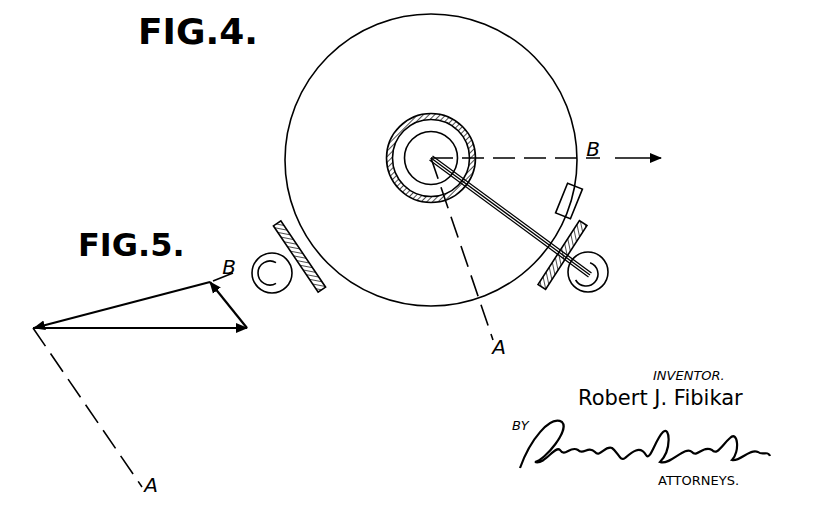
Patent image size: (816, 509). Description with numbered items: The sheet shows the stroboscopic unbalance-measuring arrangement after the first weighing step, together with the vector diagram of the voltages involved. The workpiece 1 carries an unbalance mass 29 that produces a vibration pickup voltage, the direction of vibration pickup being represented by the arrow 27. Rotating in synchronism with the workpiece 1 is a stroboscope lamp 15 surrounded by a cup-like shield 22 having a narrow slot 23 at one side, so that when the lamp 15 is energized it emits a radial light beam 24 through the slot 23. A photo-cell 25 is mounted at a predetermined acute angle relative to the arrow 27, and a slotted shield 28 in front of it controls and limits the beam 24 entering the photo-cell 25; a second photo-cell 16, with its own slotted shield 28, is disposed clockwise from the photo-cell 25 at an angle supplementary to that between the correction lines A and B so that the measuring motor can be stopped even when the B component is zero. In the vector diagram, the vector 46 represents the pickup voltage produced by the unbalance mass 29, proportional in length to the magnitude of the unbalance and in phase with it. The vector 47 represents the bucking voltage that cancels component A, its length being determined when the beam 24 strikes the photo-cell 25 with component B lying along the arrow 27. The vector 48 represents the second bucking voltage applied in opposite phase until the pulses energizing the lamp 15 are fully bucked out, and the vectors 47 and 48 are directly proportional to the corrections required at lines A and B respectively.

In FIG. 4, the workpiece 1 is at (292, 113).
In FIG. 4, the stroboscope lamp 15 is at (406, 146).
In FIG. 4, the cup-like shield 22 is at (441, 114).
In FIG. 4, the slot 23 is at (464, 185).
In FIG. 4, the radial light beam 24 is at (524, 235).
In FIG. 4, the photo-cell 25 is at (608, 272).
In FIG. 4, the arrow 27 is at (550, 145).
In FIG. 4, the slotted shield 28 is at (279, 223).
In FIG. 4, the unbalance mass 29 is at (578, 189).
In FIG. 4, the second photo-cell 16 is at (292, 282).
In FIG. 5, the vector 46 is at (236, 338).
In FIG. 5, the vector 47 is at (216, 296).
In FIG. 5, the vector 48 is at (43, 322).